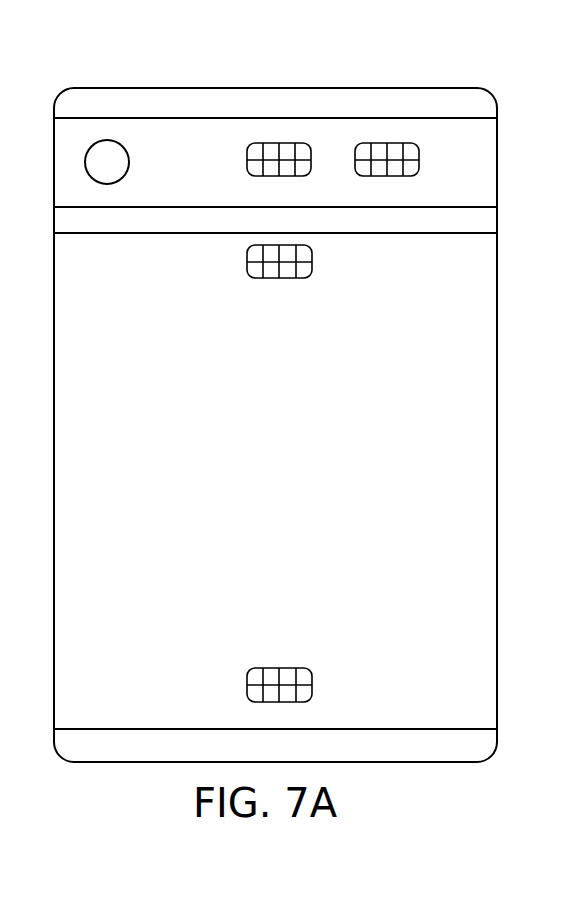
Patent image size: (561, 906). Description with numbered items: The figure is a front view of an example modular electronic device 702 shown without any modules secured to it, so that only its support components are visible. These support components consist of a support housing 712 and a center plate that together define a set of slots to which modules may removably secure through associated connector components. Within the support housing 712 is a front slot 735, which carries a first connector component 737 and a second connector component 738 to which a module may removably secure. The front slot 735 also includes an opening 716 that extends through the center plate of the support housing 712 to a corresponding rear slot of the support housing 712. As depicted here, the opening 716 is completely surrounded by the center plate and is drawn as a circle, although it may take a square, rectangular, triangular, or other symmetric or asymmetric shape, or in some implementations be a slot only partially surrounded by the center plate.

The modular electronic device 702 is at (287, 61).
The support housing 712 is at (286, 113).
The opening 716 is at (112, 162).
The front slot 735 is at (207, 191).
The first connector component 737 is at (302, 177).
The second connector component 738 is at (412, 177).